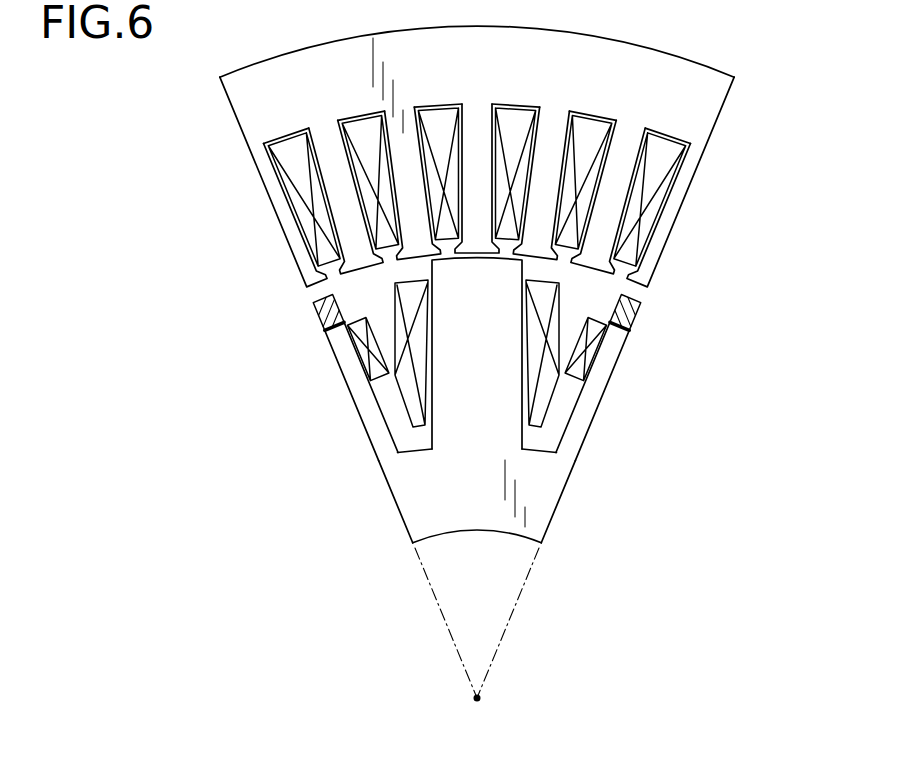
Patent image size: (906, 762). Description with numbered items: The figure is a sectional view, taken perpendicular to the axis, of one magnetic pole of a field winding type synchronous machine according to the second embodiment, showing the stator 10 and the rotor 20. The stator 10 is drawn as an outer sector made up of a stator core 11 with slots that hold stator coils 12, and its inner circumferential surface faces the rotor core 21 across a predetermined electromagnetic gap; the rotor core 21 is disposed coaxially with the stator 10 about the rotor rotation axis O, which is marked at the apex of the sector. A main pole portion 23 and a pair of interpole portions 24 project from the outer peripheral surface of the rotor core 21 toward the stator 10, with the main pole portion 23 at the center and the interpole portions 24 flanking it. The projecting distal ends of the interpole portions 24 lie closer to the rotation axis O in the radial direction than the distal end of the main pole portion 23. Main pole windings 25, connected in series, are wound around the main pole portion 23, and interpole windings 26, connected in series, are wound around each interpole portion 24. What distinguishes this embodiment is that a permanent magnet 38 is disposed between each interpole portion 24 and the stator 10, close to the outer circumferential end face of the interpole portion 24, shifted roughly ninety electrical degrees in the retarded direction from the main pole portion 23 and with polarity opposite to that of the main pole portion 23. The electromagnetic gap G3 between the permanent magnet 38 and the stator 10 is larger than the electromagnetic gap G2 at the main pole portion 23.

The stator 10 is at (482, 156).
The stator core 11 is at (265, 115).
The coil 12 is at (302, 208).
The rotor 20 is at (475, 423).
The rotor core 21 is at (418, 493).
The main pole portion 23 is at (479, 372).
The interpole portion 24 is at (360, 403).
The main pole winding 25 is at (410, 392).
The interpole winding 26 is at (362, 348).
The permanent magnet 38 is at (333, 317).
The electromagnetic gap at the main pole portion G2 is at (478, 218).
The electromagnetic gap between the permanent magnet and the stator G3 is at (462, 279).
The rotor rotation axis O is at (477, 645).